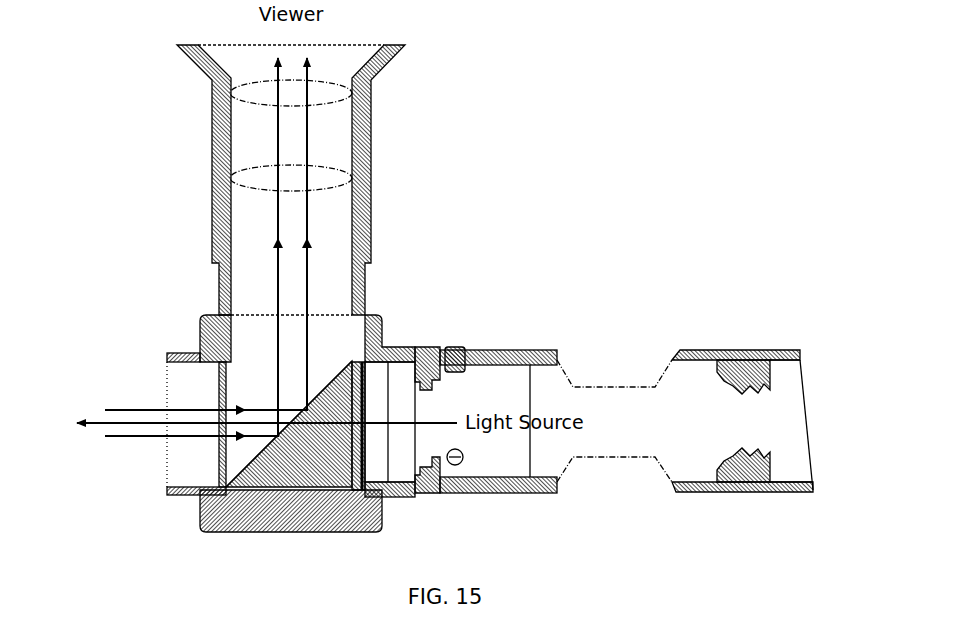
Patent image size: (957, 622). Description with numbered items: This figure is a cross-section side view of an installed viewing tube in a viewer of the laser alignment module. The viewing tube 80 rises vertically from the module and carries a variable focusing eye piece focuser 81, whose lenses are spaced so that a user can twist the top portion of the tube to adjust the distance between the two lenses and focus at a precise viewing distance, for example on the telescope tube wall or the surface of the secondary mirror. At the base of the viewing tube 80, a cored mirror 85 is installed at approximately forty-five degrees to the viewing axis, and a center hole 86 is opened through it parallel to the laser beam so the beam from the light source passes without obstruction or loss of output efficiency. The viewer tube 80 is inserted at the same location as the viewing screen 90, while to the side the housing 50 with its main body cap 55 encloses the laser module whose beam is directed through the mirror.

The viewing tube 80 is at (212, 212).
The eye piece focuser 81 is at (325, 95).
The viewing screen 90 is at (203, 337).
The main body cap 55 is at (477, 357).
The housing 50 is at (741, 358).
The cored mirror 85 is at (298, 470).
The center hole 86 is at (308, 432).